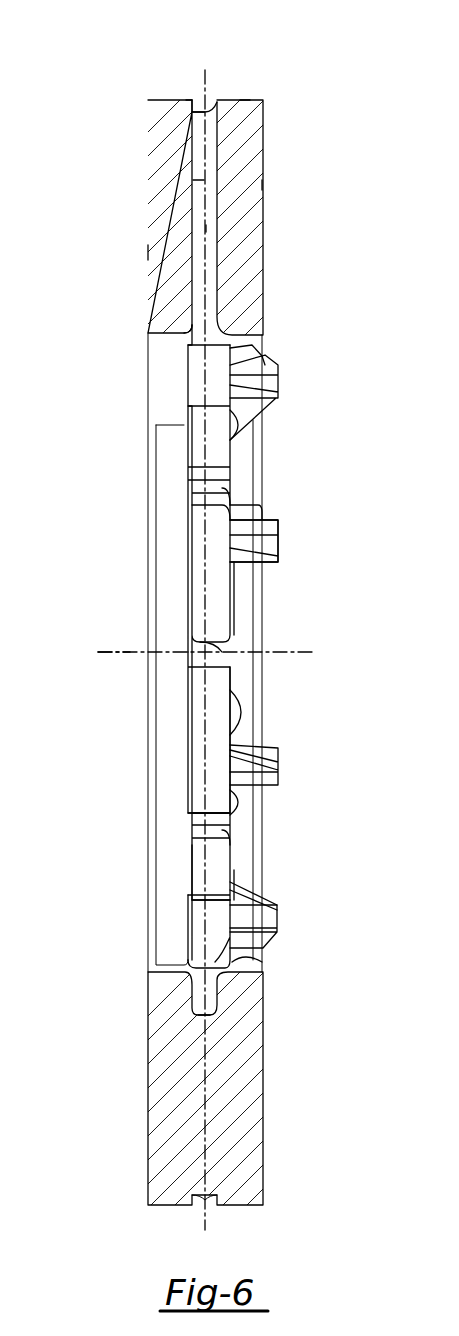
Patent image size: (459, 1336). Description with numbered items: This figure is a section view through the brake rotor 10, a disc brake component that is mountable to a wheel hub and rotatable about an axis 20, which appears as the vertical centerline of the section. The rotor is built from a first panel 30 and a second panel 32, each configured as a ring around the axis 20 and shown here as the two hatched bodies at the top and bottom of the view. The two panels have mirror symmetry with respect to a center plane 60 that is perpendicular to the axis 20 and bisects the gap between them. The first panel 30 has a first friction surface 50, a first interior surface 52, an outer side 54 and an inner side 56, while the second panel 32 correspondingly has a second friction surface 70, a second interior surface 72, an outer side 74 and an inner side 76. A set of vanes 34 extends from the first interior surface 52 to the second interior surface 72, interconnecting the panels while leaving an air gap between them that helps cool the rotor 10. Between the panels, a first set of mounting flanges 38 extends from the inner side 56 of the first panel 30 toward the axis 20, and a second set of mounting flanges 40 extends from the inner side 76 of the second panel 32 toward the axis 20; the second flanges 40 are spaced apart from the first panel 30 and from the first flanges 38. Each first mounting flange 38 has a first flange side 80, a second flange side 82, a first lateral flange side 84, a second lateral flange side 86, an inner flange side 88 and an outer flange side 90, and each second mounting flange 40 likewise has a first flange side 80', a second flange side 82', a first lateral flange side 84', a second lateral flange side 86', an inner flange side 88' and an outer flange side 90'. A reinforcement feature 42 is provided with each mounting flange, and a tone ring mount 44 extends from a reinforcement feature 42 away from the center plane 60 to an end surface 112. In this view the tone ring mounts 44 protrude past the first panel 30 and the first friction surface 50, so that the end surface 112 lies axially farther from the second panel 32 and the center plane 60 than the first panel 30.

The brake rotor 10 is at (133, 113).
The axis 20 is at (128, 652).
The first panel 30 is at (260, 100).
The second panel 32 is at (148, 100).
The set of vanes 34 is at (197, 104).
The first set of mounting flanges 38 is at (232, 433).
The second set of mounting flanges 40 is at (232, 595).
The reinforcement feature 42 is at (278, 528).
The tone ring mount 44 is at (283, 400).
The first friction surface 50 is at (262, 186).
The first interior surface 52 is at (207, 228).
The outer side 54 is at (243, 100).
The inner side 56 is at (260, 962).
The center plane 60 is at (210, 110).
The second friction surface 70 is at (148, 253).
The second interior surface 72 is at (205, 181).
The outer side 74 is at (172, 100).
The inner side 76 is at (167, 968).
The first flange side 80 is at (280, 348).
The first flange side 80' is at (282, 902).
The second flange side 82 is at (141, 368).
The second flange side 82' is at (139, 927).
The first lateral flange side 84 is at (160, 575).
The first lateral flange side 84' is at (278, 658).
The second lateral flange side 86 is at (160, 794).
The second lateral flange side 86' is at (212, 759).
The inner flange side 88 is at (160, 656).
The inner flange side 88' is at (160, 701).
The outer flange side 90 is at (142, 314).
The outer flange side 90' is at (266, 1006).
The end surface 112 is at (278, 528).